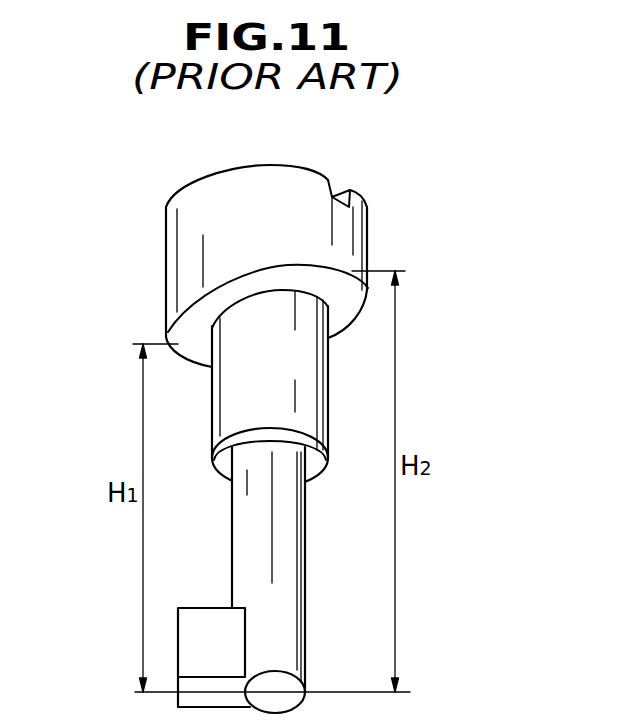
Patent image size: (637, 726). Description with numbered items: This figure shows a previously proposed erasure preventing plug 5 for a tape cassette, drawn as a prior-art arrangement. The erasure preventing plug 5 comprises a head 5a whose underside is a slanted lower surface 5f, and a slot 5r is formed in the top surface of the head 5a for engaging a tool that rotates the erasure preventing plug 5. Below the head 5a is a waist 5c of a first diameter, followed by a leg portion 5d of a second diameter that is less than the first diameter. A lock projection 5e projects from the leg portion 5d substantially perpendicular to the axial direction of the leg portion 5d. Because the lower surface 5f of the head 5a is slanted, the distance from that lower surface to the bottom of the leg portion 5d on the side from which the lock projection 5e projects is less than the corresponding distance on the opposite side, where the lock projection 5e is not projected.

The erasure preventing plug 5 is at (215, 163).
The head 5a is at (177, 255).
The slot 5r is at (352, 194).
The slanted lower surface 5f is at (188, 330).
The waist 5c is at (222, 412).
The leg portion 5d is at (247, 535).
The lock projection 5e is at (215, 652).